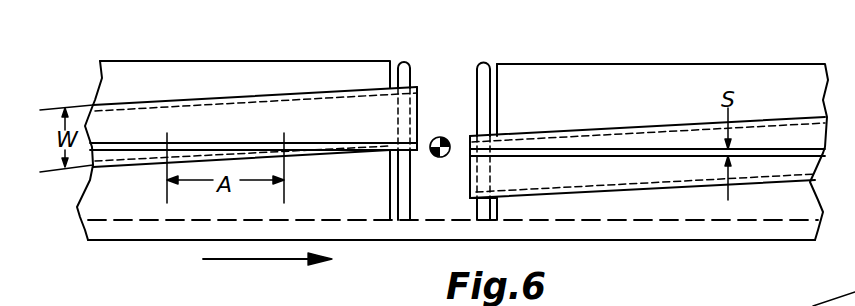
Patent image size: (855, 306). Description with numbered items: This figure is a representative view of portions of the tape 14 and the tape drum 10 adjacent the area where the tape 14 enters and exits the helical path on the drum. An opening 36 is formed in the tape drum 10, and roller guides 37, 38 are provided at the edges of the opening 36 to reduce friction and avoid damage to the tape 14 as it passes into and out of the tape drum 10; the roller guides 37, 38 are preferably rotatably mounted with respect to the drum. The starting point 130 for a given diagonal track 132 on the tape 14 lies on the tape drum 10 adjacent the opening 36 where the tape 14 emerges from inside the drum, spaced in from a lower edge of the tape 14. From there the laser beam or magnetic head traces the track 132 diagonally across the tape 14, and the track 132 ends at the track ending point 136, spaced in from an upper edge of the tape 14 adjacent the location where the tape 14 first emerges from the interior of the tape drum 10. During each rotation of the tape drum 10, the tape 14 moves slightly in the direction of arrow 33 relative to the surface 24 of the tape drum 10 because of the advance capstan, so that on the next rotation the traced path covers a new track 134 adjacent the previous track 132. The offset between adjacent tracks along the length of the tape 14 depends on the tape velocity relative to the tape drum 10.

The tape drum 10 is at (262, 47).
The tape 14 is at (153, 113).
The surface of the tape drum 24 is at (207, 72).
The arrow 33 is at (250, 263).
The opening 36 is at (477, 52).
The roller guide 37 is at (403, 63).
The roller guide 38 is at (485, 64).
The track starting point 130 is at (417, 150).
The diagonal track 132 is at (257, 147).
The new track 134 is at (176, 147).
The track ending point 136 is at (449, 141).